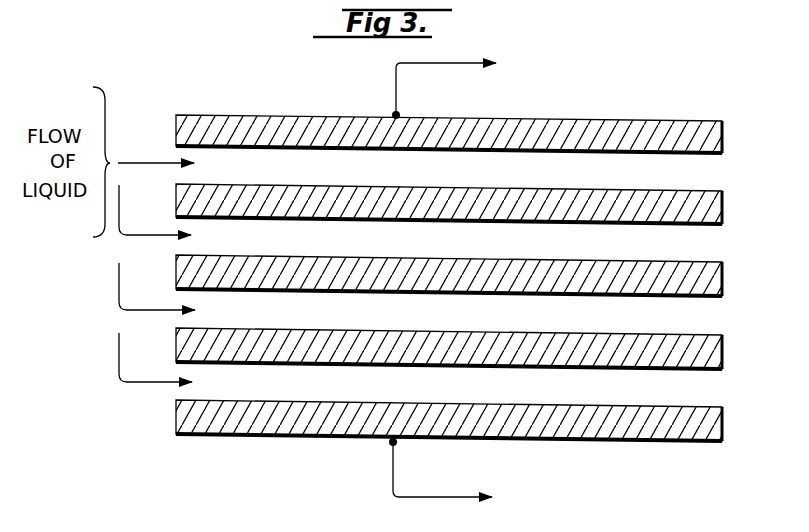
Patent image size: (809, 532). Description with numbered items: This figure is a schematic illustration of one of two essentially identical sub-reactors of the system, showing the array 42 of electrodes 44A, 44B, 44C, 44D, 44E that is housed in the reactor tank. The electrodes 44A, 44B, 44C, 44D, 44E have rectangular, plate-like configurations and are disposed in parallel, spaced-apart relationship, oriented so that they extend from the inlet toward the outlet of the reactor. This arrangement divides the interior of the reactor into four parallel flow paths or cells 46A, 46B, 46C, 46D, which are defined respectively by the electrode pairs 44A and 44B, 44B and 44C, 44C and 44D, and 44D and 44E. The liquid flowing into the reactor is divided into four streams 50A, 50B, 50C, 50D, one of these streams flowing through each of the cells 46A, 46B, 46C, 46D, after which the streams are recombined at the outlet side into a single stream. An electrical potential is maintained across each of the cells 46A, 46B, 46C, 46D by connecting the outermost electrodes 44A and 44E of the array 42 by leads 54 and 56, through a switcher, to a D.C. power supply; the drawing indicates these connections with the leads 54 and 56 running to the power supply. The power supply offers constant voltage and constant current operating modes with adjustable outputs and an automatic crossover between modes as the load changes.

The array 42 is at (250, 98).
The electrode 44A is at (712, 121).
The electrode 44B is at (712, 191).
The electrode 44C is at (712, 262).
The electrode 44D is at (712, 335).
The electrode 44E is at (712, 407).
The cell 46A is at (494, 171).
The cell 46B is at (492, 243).
The cell 46C is at (492, 316).
The cell 46D is at (487, 391).
The stream 50A is at (162, 163).
The stream 50B is at (165, 235).
The stream 50C is at (119, 284).
The stream 50D is at (119, 356).
The lead 54 is at (392, 80).
The lead 56 is at (391, 478).